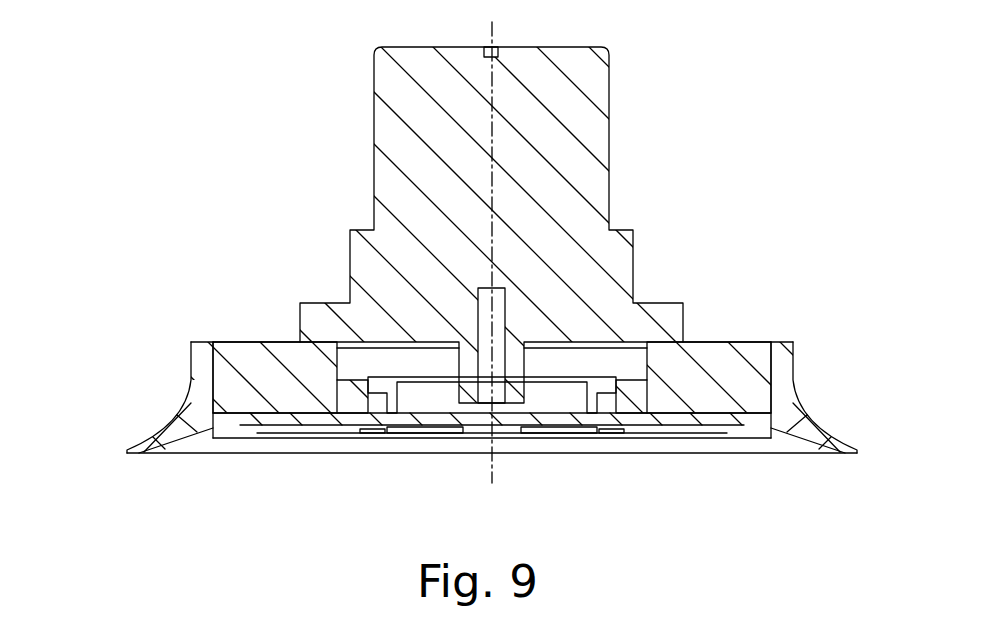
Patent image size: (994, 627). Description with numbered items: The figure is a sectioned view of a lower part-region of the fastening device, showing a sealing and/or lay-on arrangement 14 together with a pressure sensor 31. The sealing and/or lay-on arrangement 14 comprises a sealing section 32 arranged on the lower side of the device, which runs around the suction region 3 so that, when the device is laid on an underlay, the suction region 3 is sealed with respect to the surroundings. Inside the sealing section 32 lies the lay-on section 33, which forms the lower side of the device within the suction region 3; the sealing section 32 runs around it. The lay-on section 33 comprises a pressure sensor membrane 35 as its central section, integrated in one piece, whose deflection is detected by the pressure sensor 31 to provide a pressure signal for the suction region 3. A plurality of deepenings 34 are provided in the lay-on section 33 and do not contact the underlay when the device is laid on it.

The suction region 3 is at (435, 463).
The sealing and/or lay-on arrangement 14 is at (497, 302).
The pressure sensor 31 is at (598, 137).
The sealing section 32 is at (175, 430).
The lay-on section 33 is at (320, 425).
The deepenings 34 is at (600, 430).
The pressure sensor membrane 35 is at (497, 420).